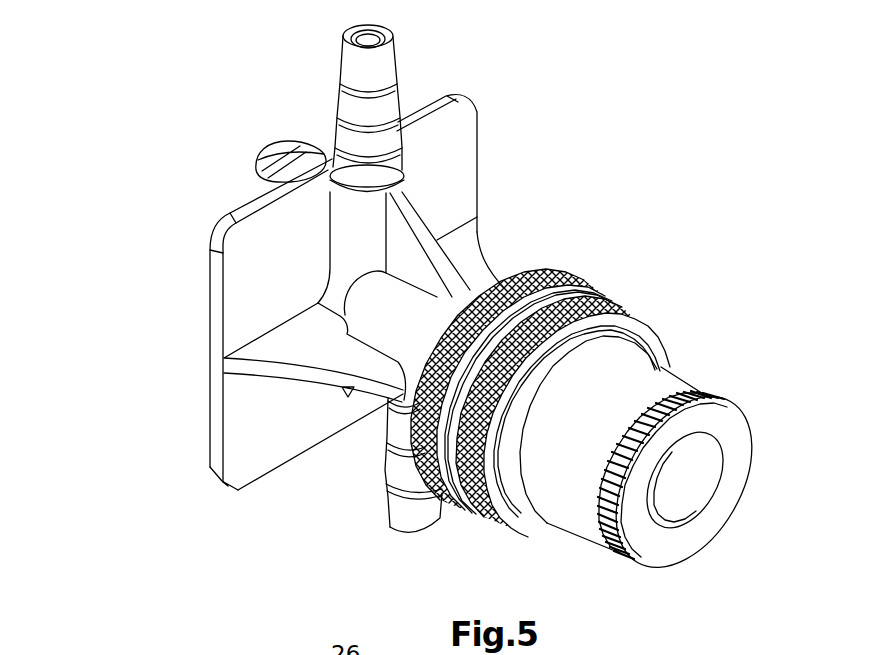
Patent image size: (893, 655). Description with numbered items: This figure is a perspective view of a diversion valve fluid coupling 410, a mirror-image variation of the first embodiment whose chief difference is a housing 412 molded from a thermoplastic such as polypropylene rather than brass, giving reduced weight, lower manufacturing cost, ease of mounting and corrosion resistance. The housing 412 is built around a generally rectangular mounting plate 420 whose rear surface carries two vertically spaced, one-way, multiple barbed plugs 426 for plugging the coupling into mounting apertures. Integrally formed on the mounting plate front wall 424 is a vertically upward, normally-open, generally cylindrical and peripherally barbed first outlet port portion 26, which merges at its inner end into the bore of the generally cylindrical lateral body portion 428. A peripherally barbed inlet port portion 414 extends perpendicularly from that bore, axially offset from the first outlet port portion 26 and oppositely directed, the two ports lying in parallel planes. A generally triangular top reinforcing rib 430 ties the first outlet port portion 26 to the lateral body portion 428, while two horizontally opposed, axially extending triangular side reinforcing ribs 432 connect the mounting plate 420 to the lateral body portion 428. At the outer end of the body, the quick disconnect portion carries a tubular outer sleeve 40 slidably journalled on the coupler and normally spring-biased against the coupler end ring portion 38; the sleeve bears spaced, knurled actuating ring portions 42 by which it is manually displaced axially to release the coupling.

The diversion valve fluid coupling 410 is at (193, 163).
The mounting plate 420 is at (215, 318).
The mounting plate front wall 424 is at (250, 444).
The multiple barbed plugs 426 is at (288, 148).
The first outlet port portion 26 is at (380, 63).
The top reinforcing rib 430 is at (417, 223).
The housing 412 is at (492, 234).
The side reinforcing ribs 432 is at (487, 265).
The lateral body portion 428 is at (390, 400).
The inlet port portion 414 is at (422, 517).
The actuating ring portions 42 is at (618, 300).
The outer sleeve 40 is at (650, 378).
The coupler end ring portion 38 is at (724, 398).